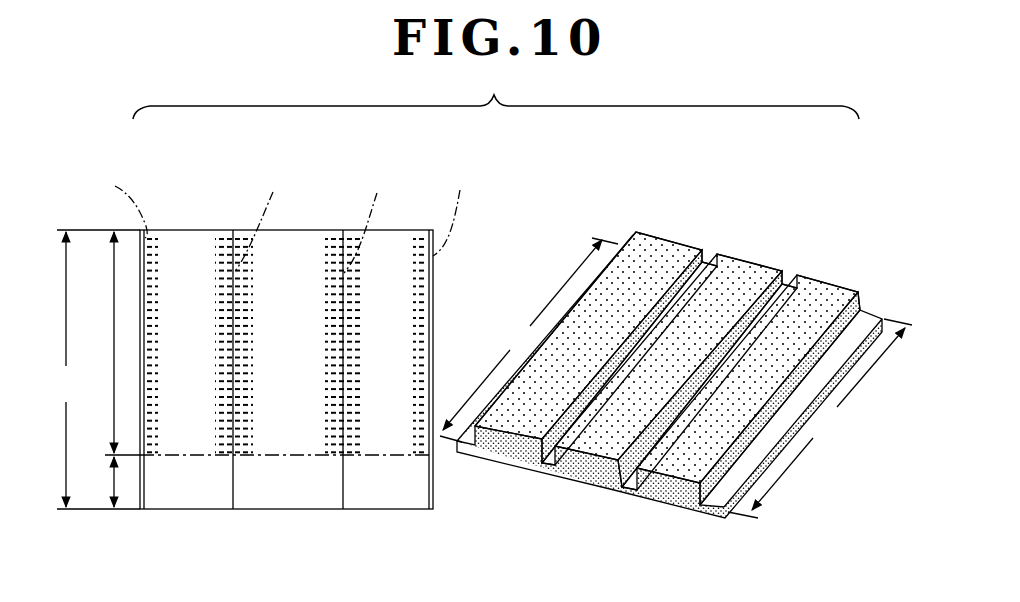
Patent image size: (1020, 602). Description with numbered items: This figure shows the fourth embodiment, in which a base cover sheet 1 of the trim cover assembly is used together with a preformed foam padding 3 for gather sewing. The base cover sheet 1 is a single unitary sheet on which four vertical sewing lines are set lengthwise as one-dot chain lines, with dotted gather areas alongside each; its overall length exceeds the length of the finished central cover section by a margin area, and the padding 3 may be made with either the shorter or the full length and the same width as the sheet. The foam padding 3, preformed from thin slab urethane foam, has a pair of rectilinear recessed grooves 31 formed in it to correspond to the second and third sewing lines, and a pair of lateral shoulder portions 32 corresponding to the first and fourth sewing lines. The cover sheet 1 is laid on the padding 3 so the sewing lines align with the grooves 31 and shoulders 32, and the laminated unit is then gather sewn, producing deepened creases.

The base cover sheet 1 is at (172, 208).
The foam padding 3 is at (600, 504).
The recessed grooves 31 is at (705, 257).
The lateral shoulder portions 32 is at (465, 455).